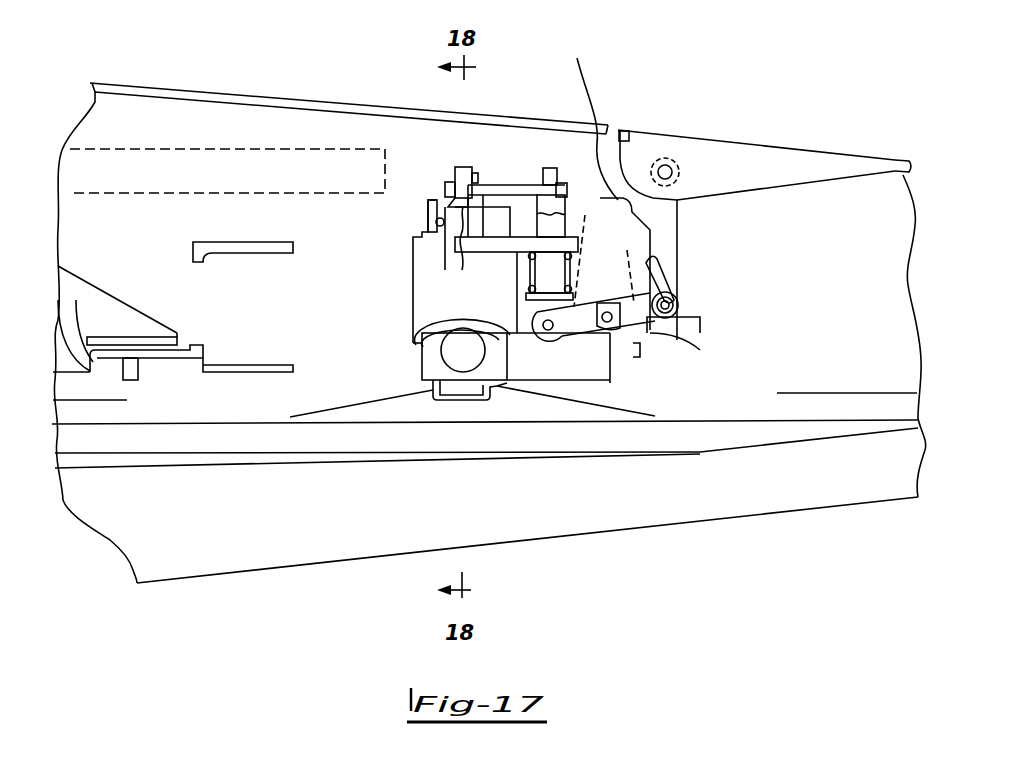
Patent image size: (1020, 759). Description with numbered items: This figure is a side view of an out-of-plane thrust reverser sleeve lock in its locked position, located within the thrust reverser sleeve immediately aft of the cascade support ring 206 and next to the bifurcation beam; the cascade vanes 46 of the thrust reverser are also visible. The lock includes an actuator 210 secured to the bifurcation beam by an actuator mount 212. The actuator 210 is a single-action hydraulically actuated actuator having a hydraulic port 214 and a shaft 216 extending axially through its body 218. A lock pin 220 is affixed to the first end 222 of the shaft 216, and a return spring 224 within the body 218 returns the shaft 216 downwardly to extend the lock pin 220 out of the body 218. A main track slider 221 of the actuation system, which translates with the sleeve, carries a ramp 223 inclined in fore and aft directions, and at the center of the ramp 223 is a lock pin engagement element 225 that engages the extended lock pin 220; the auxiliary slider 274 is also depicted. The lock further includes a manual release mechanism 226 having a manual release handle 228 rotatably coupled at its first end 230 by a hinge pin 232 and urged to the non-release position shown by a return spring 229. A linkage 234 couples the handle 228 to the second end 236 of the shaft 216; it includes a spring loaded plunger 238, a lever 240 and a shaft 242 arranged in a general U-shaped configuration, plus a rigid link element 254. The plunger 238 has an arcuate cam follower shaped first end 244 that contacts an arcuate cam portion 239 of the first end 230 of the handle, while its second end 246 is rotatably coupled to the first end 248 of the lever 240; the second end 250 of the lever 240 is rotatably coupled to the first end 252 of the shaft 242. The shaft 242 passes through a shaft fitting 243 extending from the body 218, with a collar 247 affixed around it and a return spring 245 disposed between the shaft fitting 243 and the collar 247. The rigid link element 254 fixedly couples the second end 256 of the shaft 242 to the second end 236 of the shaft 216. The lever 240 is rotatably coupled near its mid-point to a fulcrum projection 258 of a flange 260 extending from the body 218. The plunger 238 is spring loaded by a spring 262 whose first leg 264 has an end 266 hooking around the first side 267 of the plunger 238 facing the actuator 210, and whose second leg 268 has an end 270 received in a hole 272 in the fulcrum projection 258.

The cascade vanes 46 is at (95, 388).
The cascade support ring 206 is at (207, 390).
The actuator 210 is at (421, 196).
The actuator mount 212 is at (412, 282).
The hydraulic port 214 is at (445, 375).
The shaft 216 is at (463, 165).
The body 218 is at (422, 373).
The lock pin 220 is at (483, 403).
The main track slider 221 is at (718, 410).
The first end 222 is at (427, 383).
The ramp 223 is at (300, 416).
The return spring 224 is at (422, 224).
The lock pin engagement element 225 is at (500, 416).
The manual release mechanism 226 is at (722, 282).
The manual release handle 228 is at (648, 118).
The return spring 229 is at (668, 156).
The first end 230 is at (615, 130).
The hinge pin 232 is at (676, 173).
The linkage 234 is at (611, 275).
The second end 236 is at (478, 175).
The spring loaded plunger 238 is at (683, 243).
The arcuate cam portion 239 is at (591, 117).
The lever 240 is at (650, 358).
The shaft 242 is at (420, 336).
The shaft fitting 243 is at (572, 223).
The arcuate cam follower shaped first end 244 is at (633, 205).
The return spring 245 is at (517, 268).
The second end 246 is at (690, 330).
The collar 247 is at (517, 295).
The first end 248 is at (655, 345).
The second end 250 is at (422, 357).
The first end 252 is at (579, 306).
The rigid link element 254 is at (428, 210).
The second end 256 is at (548, 165).
The fulcrum projection 258 is at (650, 272).
The flange 260 is at (640, 350).
The spring 262 is at (677, 297).
The first leg 264 is at (677, 277).
The end 266 is at (682, 250).
The first side 267 is at (650, 257).
The second leg 268 is at (632, 330).
The end 270 is at (602, 307).
The hole 272 is at (610, 327).
The auxiliary slider 274 is at (142, 136).